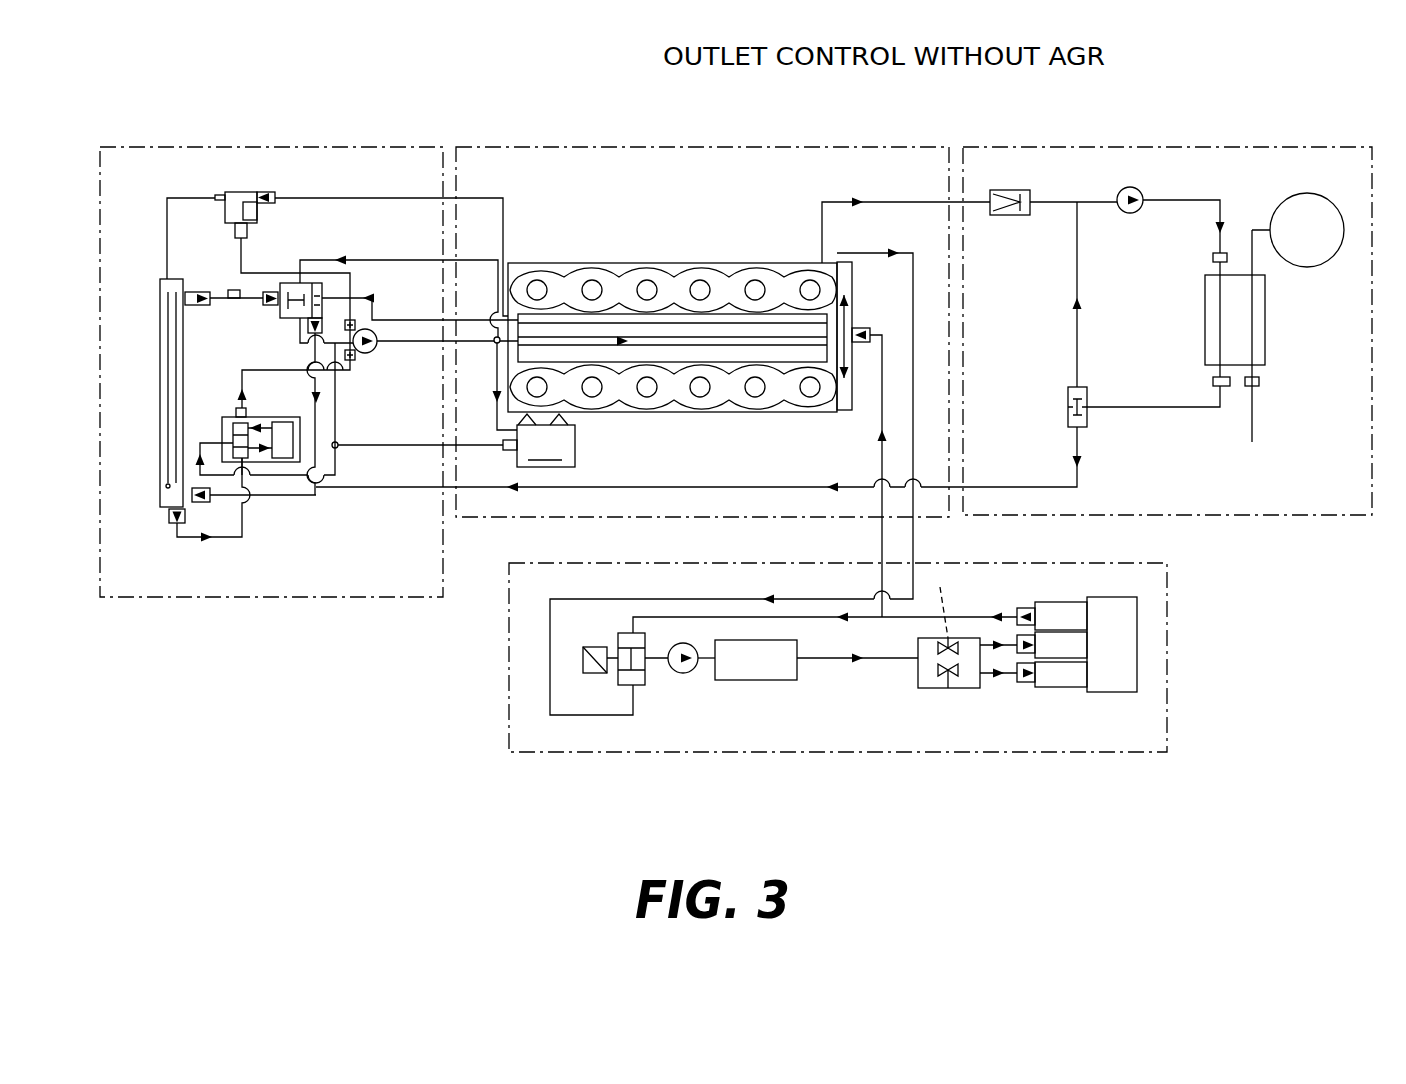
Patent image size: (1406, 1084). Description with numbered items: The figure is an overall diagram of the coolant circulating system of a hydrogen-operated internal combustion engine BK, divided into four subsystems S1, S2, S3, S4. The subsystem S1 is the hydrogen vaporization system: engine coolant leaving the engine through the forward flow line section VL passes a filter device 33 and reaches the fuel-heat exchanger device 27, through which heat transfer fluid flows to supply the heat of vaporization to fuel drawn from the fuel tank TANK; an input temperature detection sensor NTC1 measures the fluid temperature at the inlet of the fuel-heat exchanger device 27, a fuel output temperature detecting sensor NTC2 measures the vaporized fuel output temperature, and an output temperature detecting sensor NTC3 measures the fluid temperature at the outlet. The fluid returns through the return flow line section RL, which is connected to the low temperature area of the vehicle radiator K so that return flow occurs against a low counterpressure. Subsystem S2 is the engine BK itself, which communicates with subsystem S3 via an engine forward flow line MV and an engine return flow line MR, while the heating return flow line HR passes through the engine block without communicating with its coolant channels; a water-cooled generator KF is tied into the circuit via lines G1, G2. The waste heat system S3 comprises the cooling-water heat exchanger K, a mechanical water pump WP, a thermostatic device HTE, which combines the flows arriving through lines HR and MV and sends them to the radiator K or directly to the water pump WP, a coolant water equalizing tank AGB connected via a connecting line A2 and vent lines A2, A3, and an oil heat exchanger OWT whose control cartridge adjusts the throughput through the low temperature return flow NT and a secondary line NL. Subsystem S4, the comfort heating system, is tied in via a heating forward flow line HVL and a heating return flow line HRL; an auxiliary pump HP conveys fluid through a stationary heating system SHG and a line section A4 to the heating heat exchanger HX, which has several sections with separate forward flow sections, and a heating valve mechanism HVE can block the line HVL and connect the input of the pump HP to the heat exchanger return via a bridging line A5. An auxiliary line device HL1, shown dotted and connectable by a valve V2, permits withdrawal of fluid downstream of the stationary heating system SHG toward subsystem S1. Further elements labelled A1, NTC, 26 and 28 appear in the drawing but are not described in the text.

The subsystem S1 is at (1262, 163).
The subsystem S2 is at (550, 165).
The waste heat system S3 is at (150, 168).
The comfort heating system S4 is at (525, 707).
The control line A1 is at (268, 273).
The connecting line A2 is at (167, 262).
The vent line A3 is at (365, 195).
The line section A4 is at (822, 659).
The bridging line A5 is at (688, 617).
The coolant water equalizing tank AGB is at (245, 201).
The temperature sensor NTC is at (236, 290).
The input temperature detection sensor NTC1 is at (1210, 258).
The fuel output temperature detecting sensor NTC2 is at (1252, 388).
The output temperature detecting sensor NTC3 is at (1222, 387).
The heating return flow line HR is at (404, 260).
The engine forward flow line MV is at (420, 320).
The engine return flow line MR is at (398, 343).
The mechanical water pump WP is at (368, 353).
The line G1 is at (496, 394).
The line G2 is at (402, 446).
The secondary line NL is at (335, 460).
The oil heat exchanger OWT is at (283, 445).
The low temperature return flow NT is at (168, 497).
The cooling-water heat exchanger K is at (160, 407).
The thermostatic device HTE is at (273, 322).
The internal combustion engine BK is at (683, 266).
The water-cooled generator KF is at (539, 440).
The forward flow line section VL is at (906, 210).
The return flow line section RL is at (1010, 487).
The pump 26 is at (1136, 188).
The filter device 33 is at (1027, 214).
The valve 28 is at (1068, 392).
The fuel-heat exchanger device 27 is at (1207, 337).
The fuel tank TANK is at (1307, 218).
The heating return flow line HRL is at (882, 540).
The heating forward flow line HVL is at (913, 552).
The auxiliary line device HL1 is at (945, 600).
The heating valve mechanism HVE is at (638, 686).
The auxiliary pump HP is at (683, 673).
The stationary heating system SHG is at (756, 660).
The valve V2 is at (950, 688).
The heating heat exchanger HX is at (1130, 660).